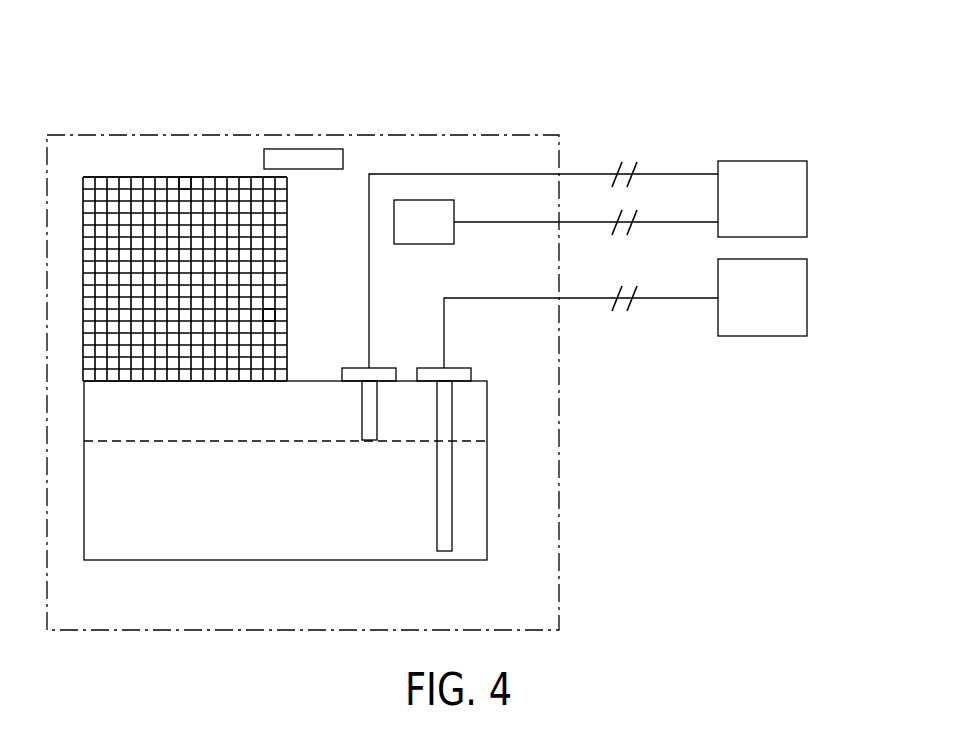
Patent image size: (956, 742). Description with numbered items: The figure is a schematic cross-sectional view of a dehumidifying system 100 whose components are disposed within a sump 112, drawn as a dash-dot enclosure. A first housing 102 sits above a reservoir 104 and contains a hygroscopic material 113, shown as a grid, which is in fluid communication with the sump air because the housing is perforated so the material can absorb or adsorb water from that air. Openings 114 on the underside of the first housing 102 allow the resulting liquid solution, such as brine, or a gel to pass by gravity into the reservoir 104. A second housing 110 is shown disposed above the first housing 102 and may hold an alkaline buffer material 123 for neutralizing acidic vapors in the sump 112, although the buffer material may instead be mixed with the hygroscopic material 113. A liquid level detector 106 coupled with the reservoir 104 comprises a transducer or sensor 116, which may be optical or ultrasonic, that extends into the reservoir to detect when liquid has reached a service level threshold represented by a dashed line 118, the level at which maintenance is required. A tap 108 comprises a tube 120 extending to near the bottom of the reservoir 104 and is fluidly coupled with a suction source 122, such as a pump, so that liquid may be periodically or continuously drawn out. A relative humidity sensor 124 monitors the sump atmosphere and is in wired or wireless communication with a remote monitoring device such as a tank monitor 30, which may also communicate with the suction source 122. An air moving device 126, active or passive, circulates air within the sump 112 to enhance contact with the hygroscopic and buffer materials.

The dehumidifying system 100 is at (656, 74).
The first housing 102 is at (288, 287).
The reservoir 104 is at (125, 421).
The liquid level detector 106 is at (380, 363).
The tap 108 is at (458, 363).
The second housing 110 is at (116, 177).
The sump 112 is at (560, 590).
The hygroscopic material 113 is at (275, 320).
The openings 114 is at (194, 396).
The transducer or sensor 116 is at (378, 420).
The service level threshold 118 is at (284, 441).
The tube 120 is at (436, 530).
The suction source 122 is at (808, 298).
The alkaline buffer material 123 is at (183, 184).
The relative humidity sensor 124 is at (456, 212).
The air moving device 126 is at (322, 149).
The tank monitor 30 is at (808, 198).